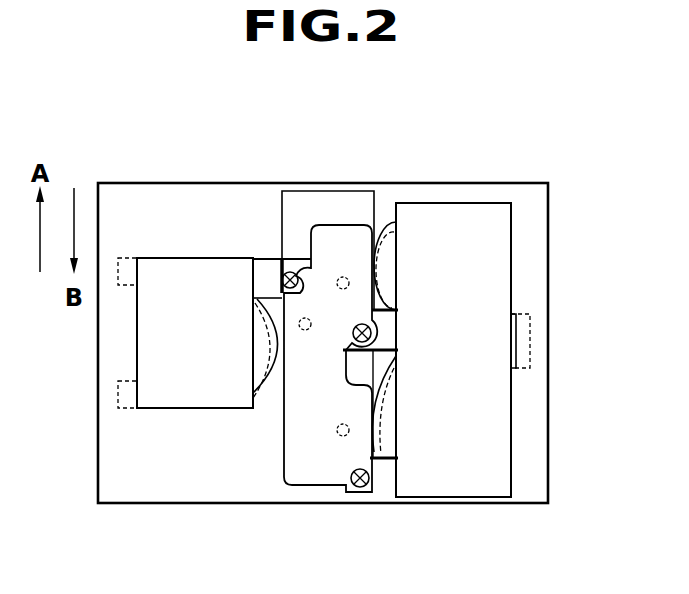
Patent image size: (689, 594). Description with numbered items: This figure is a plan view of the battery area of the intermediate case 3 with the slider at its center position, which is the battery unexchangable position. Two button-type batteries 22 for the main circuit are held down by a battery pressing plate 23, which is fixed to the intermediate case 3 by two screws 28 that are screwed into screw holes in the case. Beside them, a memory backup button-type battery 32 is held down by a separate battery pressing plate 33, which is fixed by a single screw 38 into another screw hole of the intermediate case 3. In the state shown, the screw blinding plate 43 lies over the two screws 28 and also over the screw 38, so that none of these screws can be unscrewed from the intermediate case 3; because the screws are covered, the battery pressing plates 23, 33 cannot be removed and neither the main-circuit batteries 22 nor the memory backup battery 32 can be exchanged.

The intermediate case 3 is at (560, 436).
The button-type batteries for the main circuit 22 is at (381, 229).
The battery pressing plate 23 is at (495, 294).
The screws 28 is at (380, 329).
The memory backup button-type battery 32 is at (258, 386).
The battery pressing plate 33 is at (146, 346).
The screw 38 is at (280, 262).
The screw blinding plate 43 is at (298, 474).